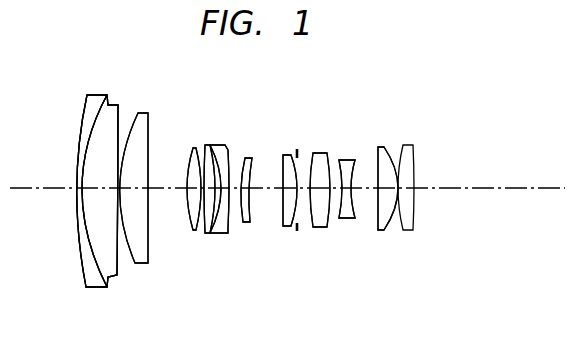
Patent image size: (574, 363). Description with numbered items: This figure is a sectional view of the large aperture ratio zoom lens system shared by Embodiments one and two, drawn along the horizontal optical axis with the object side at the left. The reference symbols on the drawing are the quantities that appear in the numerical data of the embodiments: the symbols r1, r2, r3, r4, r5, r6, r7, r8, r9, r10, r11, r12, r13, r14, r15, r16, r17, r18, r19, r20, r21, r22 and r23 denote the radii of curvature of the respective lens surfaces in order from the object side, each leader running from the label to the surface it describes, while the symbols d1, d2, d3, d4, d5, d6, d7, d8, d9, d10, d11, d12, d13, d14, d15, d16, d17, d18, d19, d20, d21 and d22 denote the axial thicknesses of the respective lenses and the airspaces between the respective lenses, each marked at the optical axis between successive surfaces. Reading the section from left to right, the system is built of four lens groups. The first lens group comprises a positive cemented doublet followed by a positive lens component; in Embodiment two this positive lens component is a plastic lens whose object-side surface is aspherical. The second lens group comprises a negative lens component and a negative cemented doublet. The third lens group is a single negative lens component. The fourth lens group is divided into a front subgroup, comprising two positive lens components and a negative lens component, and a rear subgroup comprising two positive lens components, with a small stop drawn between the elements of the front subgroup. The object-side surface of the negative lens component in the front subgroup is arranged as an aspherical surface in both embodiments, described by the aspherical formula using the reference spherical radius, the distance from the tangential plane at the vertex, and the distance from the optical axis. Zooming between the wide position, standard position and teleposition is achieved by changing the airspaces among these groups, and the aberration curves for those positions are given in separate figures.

The radius of curvature of first lens surface r1 is at (80, 211).
The radius of curvature of second lens surface r2 is at (80, 211).
The radius of curvature of third lens surface r3 is at (103, 209).
The radius of curvature of fourth lens surface r4 is at (144, 201).
The radius of curvature of fifth lens surface r5 is at (144, 201).
The radius of curvature of sixth lens surface r6 is at (179, 201).
The radius of curvature of seventh lens surface r7 is at (179, 201).
The radius of curvature of eighth lens surface r8 is at (203, 209).
The radius of curvature of ninth lens surface r9 is at (203, 209).
The radius of curvature of tenth lens surface r10 is at (232, 204).
The radius of curvature of eleventh lens surface r11 is at (232, 204).
The radius of curvature of twelfth lens surface r12 is at (262, 204).
The radius of curvature of thirteenth lens surface r13 is at (262, 201).
The radius of curvature of fourteenth lens surface r14 is at (297, 202).
The radius of curvature of fifteenth lens surface r15 is at (298, 202).
The radius of curvature of sixteenth lens surface r16 is at (326, 200).
The radius of curvature of seventeenth lens surface r17 is at (326, 200).
The radius of curvature of eighteenth lens surface r18 is at (353, 196).
The radius of curvature of nineteenth lens surface r19 is at (355, 196).
The radius of curvature of twentieth lens surface r20 is at (386, 198).
The radius of curvature of twenty-first lens surface r21 is at (392, 198).
The radius of curvature of twenty-second lens surface r22 is at (423, 223).
The radius of curvature of twenty-third lens surface r23 is at (423, 223).
The first lens thickness d1 is at (76, 186).
The second lens thickness d2 is at (103, 187).
The third axial distance d3 is at (117, 193).
The fourth axial distance d4 is at (133, 186).
The fifth axial distance d5 is at (162, 186).
The sixth axial distance d6 is at (190, 186).
The seventh axial distance d7 is at (200, 186).
The eighth axial distance d8 is at (208, 186).
The ninth axial distance d9 is at (218, 186).
The tenth axial distance d10 is at (228, 186).
The eleventh axial distance d11 is at (237, 186).
The twelfth axial distance d12 is at (247, 186).
The thirteenth axial distance d13 is at (265, 186).
The fourteenth axial distance d14 is at (290, 186).
The fifteenth axial distance d15 is at (304, 186).
The sixteenth axial distance d16 is at (320, 186).
The seventeenth axial distance d17 is at (334, 186).
The eighteenth axial distance d18 is at (346, 186).
The nineteenth axial distance d19 is at (366, 186).
The twentieth axial distance d20 is at (389, 186).
The twenty-first axial distance d21 is at (402, 186).
The twenty-second axial distance d22 is at (411, 186).